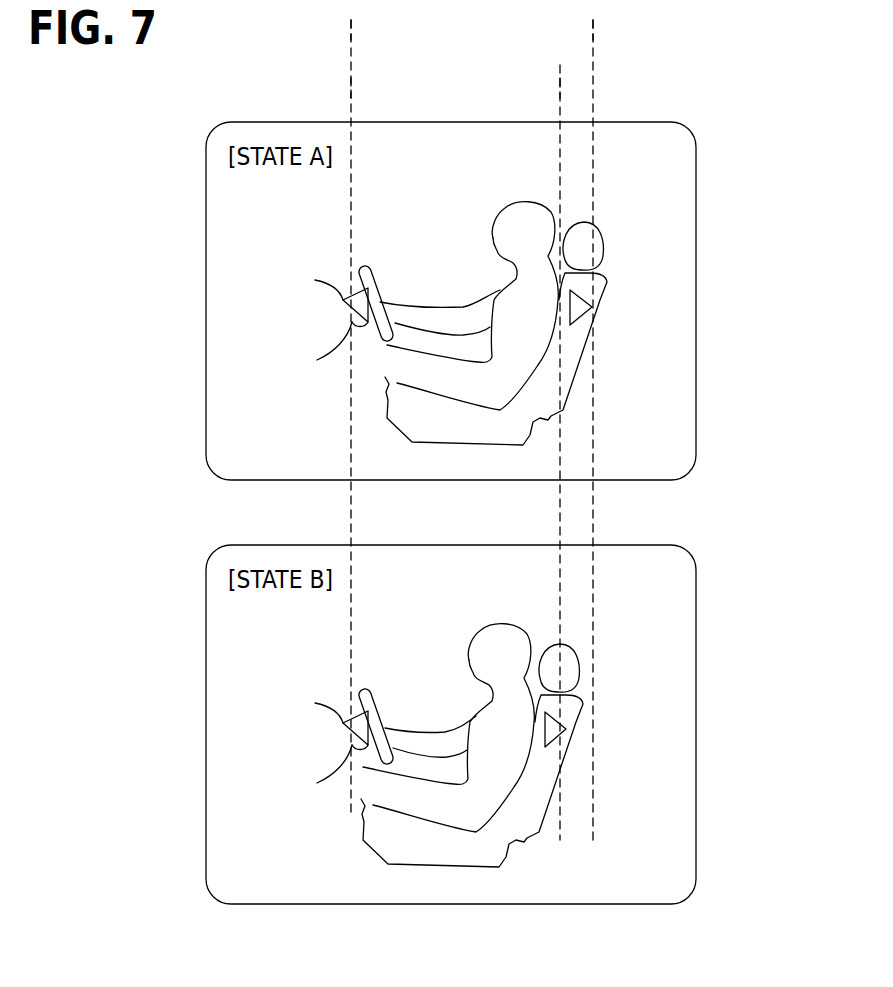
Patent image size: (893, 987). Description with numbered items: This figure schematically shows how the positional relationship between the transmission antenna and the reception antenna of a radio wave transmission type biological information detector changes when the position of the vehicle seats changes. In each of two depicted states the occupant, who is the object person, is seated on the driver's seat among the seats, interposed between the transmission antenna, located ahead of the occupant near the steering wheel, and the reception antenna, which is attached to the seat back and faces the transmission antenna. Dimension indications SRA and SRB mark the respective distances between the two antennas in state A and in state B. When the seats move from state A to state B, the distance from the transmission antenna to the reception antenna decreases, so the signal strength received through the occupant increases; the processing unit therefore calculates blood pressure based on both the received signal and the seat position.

The seat slide range A SRA is at (580, 35).
The seat slide range B SRB is at (547, 93).